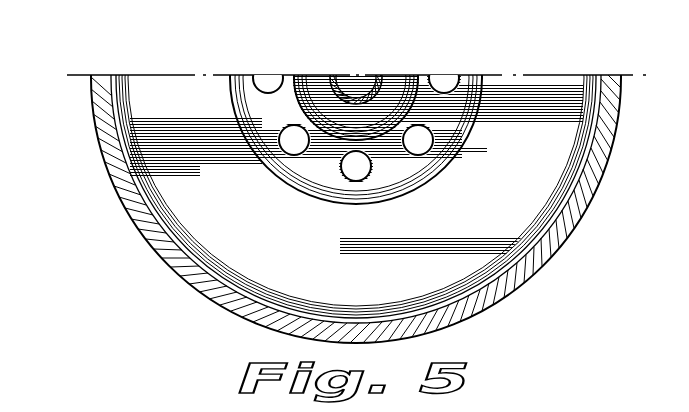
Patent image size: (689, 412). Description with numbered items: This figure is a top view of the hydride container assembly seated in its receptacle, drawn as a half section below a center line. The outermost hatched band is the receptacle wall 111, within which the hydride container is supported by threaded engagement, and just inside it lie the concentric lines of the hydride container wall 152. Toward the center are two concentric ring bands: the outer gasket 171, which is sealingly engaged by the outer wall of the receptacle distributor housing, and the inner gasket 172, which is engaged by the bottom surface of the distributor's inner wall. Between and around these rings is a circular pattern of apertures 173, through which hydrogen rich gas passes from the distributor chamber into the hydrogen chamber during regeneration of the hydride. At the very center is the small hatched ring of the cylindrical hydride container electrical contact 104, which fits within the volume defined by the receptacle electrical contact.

The cylindrical hydride container electrical contact 104 is at (364, 83).
The receptacle wall 111 is at (124, 203).
The hydride container wall 152 is at (131, 158).
The outer gasket 171 is at (281, 181).
The inner gasket 172 is at (292, 98).
The apertures 173 is at (345, 180).